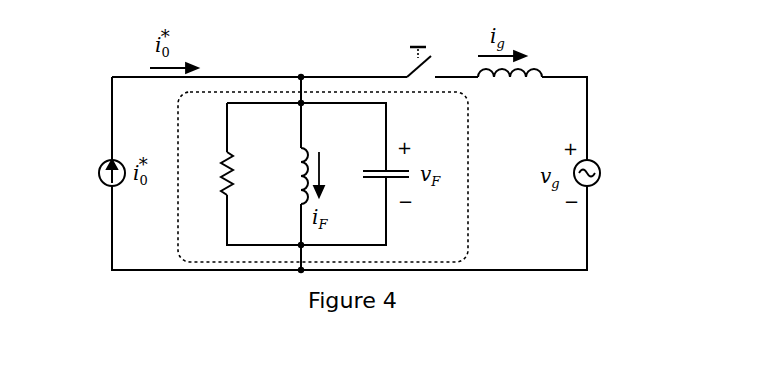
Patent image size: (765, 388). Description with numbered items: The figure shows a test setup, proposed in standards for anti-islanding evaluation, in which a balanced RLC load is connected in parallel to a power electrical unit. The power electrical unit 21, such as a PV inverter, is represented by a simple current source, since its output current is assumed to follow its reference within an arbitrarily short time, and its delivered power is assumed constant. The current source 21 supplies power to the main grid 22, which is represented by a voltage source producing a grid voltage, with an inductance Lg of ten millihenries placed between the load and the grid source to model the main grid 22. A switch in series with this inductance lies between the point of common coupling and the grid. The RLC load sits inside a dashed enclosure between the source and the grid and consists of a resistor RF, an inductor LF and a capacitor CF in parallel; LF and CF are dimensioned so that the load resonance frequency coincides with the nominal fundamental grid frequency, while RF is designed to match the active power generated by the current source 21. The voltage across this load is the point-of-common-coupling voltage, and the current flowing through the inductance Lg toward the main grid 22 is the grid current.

The power electrical unit 21 is at (102, 162).
The main grid 22 is at (598, 162).
The resistor RF is at (206, 162).
The inductor LF is at (287, 167).
The capacitor CF is at (379, 153).
The inductance Lg is at (510, 94).